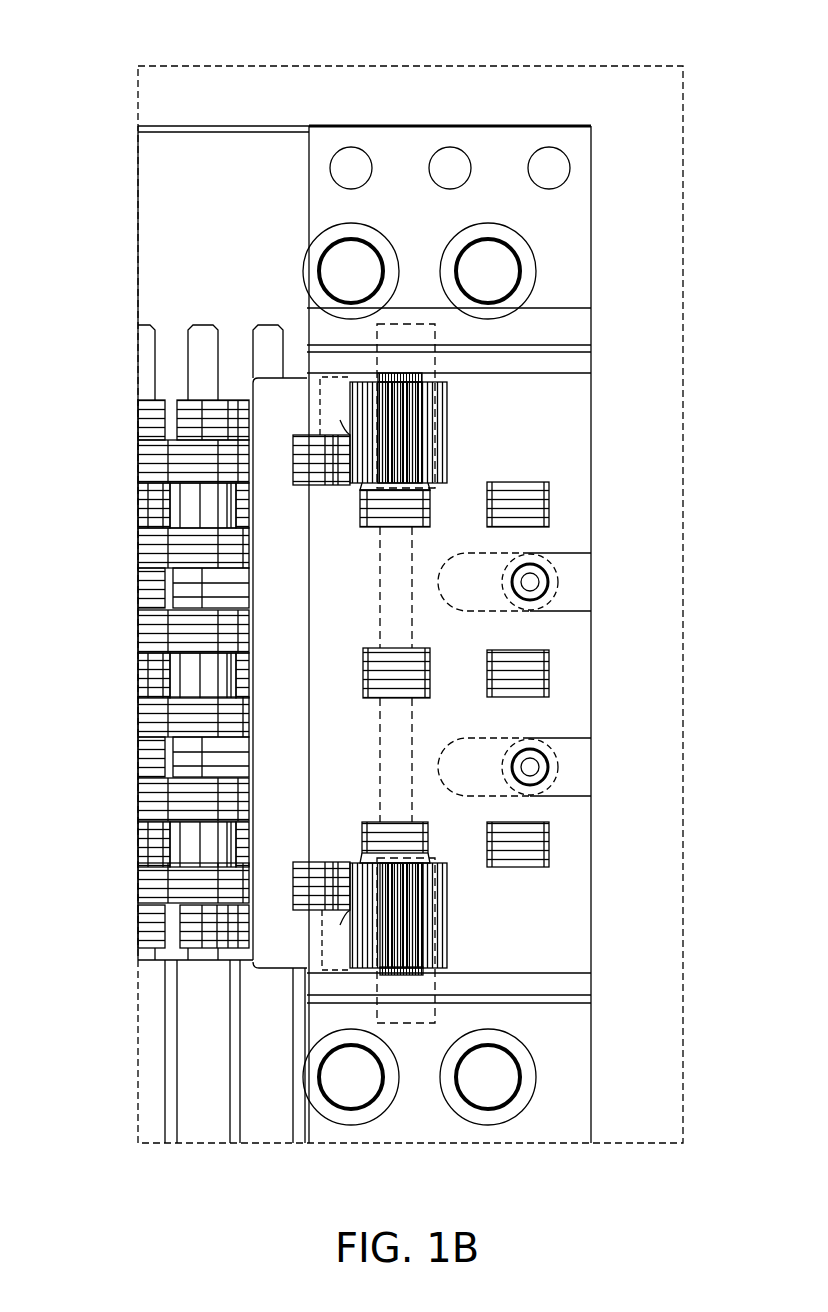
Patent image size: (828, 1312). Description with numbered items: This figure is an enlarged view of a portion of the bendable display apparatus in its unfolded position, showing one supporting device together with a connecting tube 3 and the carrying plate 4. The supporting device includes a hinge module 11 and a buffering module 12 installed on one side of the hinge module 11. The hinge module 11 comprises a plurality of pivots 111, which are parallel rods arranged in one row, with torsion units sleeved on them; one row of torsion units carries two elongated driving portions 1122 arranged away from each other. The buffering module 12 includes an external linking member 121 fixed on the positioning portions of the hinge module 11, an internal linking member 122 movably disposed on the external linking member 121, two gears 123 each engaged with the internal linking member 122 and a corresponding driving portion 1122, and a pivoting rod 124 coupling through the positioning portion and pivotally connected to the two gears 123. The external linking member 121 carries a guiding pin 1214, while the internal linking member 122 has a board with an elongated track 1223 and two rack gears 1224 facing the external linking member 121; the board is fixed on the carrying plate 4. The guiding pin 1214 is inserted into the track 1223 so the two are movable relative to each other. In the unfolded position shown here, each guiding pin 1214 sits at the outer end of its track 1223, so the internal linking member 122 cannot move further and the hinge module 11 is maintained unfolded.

The connecting tube 3 is at (178, 1061).
The carrying plate 4 is at (215, 124).
The hinge module 11 is at (140, 461).
The buffering module 12 is at (488, 124).
The pivot 111 is at (199, 342).
The external linking member 121 is at (556, 400).
The internal linking member 122 is at (558, 227).
The gear 123 is at (410, 921).
The pivoting rod 124 is at (398, 604).
The driving portion 1122 is at (311, 876).
The guiding pin 1214 is at (532, 767).
The track 1223 is at (498, 737).
The rack gear 1224 is at (410, 1012).